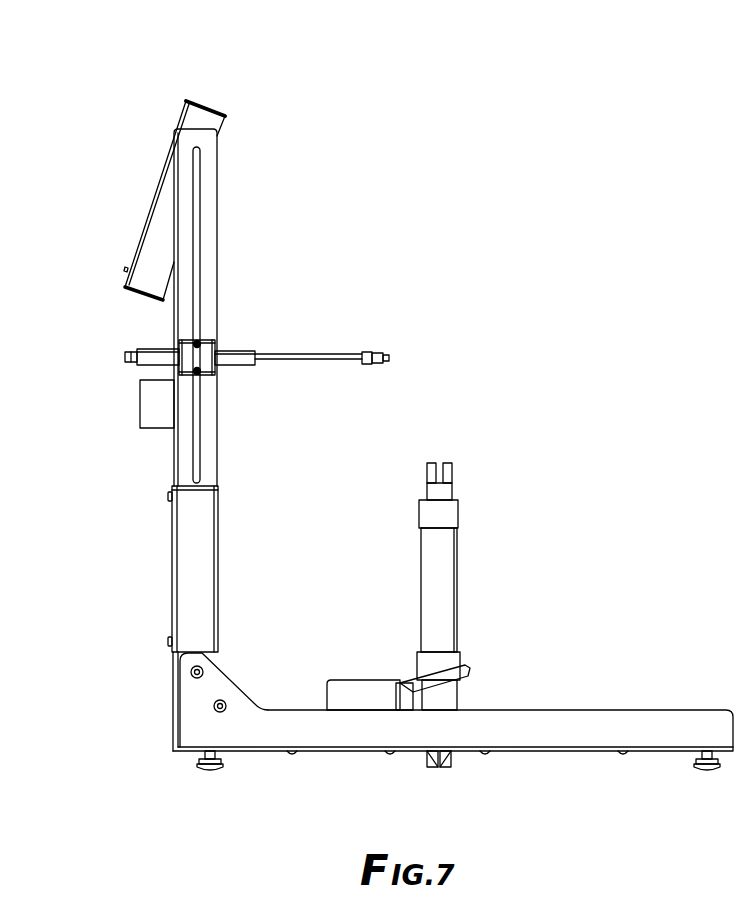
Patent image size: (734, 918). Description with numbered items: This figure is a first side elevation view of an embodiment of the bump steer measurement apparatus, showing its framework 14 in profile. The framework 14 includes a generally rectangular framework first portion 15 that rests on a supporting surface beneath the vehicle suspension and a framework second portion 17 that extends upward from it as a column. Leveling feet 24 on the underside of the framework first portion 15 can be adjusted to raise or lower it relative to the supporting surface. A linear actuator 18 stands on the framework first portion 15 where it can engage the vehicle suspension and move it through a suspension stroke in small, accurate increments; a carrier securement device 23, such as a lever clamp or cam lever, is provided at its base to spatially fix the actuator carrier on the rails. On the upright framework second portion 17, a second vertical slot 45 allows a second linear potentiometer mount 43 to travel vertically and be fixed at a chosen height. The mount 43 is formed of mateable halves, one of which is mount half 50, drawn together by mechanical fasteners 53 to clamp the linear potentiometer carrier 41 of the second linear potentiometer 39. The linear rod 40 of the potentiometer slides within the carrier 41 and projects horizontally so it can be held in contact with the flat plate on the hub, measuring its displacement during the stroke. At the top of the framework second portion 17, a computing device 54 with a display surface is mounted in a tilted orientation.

The framework 14 is at (174, 712).
The framework first portion 15 is at (518, 740).
The framework second portion 17 is at (172, 575).
The linear actuator 18 is at (452, 508).
The carrier securement device 23 is at (395, 695).
The leveling feet 24 is at (210, 772).
The second linear potentiometer 39 is at (397, 356).
The linear rod 40 is at (306, 368).
The linear potentiometer carrier 41 is at (236, 366).
The second linear potentiometer mount 43 is at (217, 334).
The second vertical slot 45 is at (198, 180).
The mount half 50 is at (190, 362).
The mechanical fasteners 53 is at (196, 372).
The computing device 54 is at (224, 100).